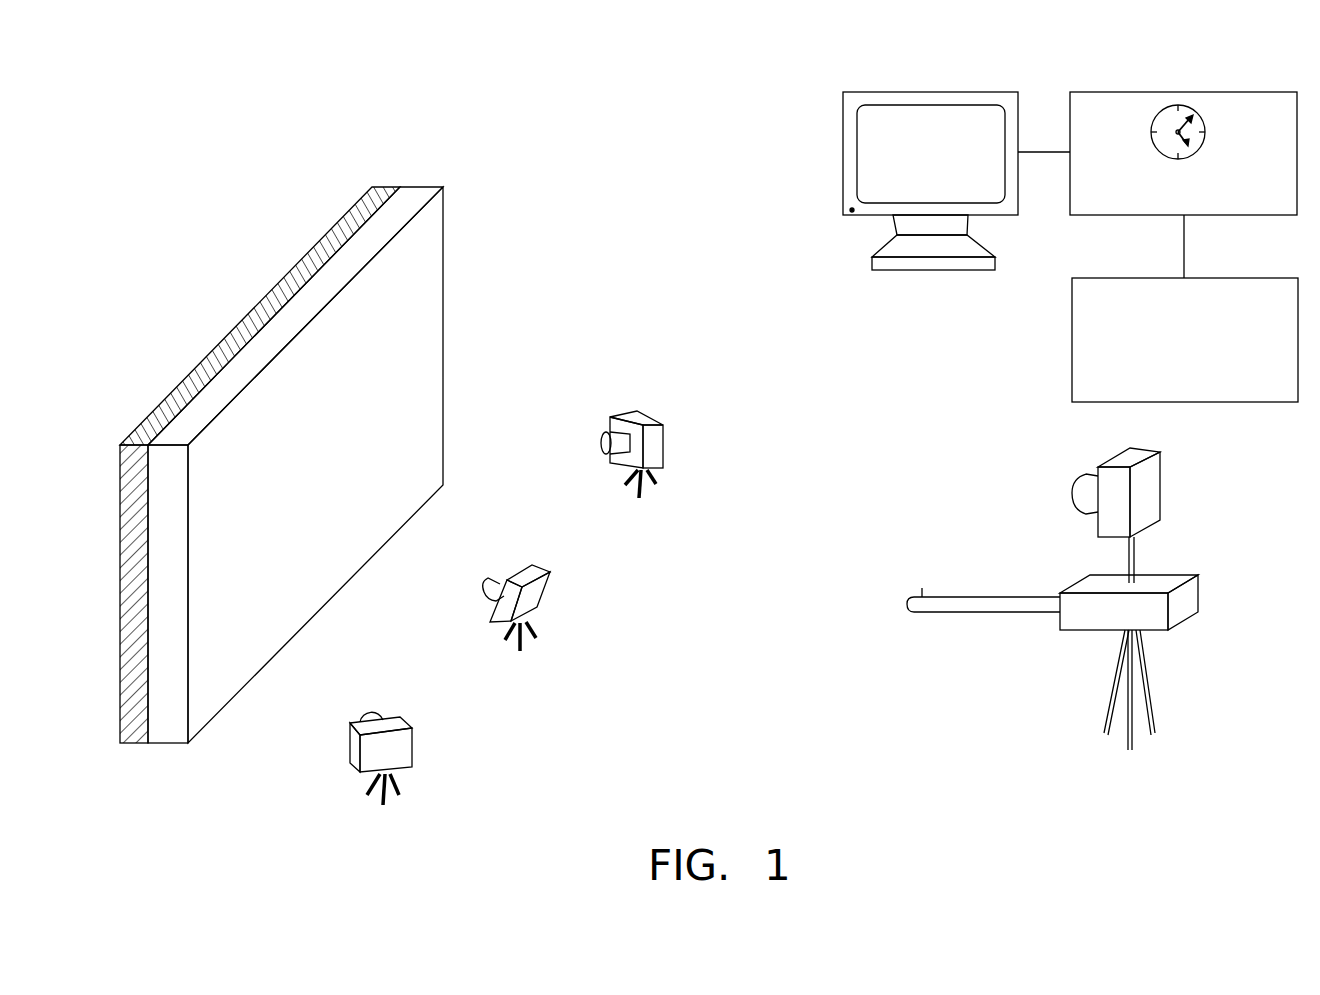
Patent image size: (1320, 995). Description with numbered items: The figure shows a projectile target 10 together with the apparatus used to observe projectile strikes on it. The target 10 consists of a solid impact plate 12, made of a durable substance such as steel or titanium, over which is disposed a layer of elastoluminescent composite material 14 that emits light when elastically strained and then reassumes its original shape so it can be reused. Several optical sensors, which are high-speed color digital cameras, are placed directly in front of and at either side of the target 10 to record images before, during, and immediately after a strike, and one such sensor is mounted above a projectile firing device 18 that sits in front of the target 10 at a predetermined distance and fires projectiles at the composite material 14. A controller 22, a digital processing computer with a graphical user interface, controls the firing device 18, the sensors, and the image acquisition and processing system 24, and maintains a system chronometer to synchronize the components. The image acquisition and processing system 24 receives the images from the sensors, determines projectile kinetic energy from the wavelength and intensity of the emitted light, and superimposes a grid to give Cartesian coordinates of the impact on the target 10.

The projectile target 10 is at (230, 190).
The impact plate 12 is at (245, 320).
The elastoluminescent composite material 14 is at (425, 298).
The projectile firing device 18 is at (1200, 593).
The controller 22 is at (1167, 92).
The image acquisition and processing system 24 is at (1218, 278).